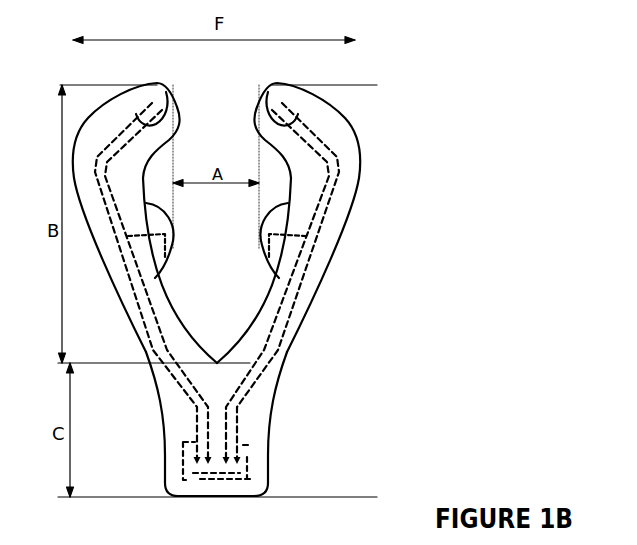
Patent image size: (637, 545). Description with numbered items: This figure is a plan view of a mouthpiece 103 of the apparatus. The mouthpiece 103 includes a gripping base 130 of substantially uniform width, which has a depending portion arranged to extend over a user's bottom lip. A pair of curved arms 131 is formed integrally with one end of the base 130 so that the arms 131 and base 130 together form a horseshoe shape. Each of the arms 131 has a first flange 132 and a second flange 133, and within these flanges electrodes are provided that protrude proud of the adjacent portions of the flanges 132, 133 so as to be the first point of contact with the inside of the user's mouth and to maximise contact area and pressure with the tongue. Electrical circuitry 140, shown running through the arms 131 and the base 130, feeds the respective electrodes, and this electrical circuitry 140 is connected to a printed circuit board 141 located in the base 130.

The mouthpiece 103 is at (410, 189).
The gripping base 130 is at (260, 450).
The curved arms 131 is at (103, 237).
The first flange 132 is at (272, 90).
The second flange 133 is at (266, 236).
The electrical circuitry 140 is at (296, 310).
The printed circuit board 141 is at (250, 467).